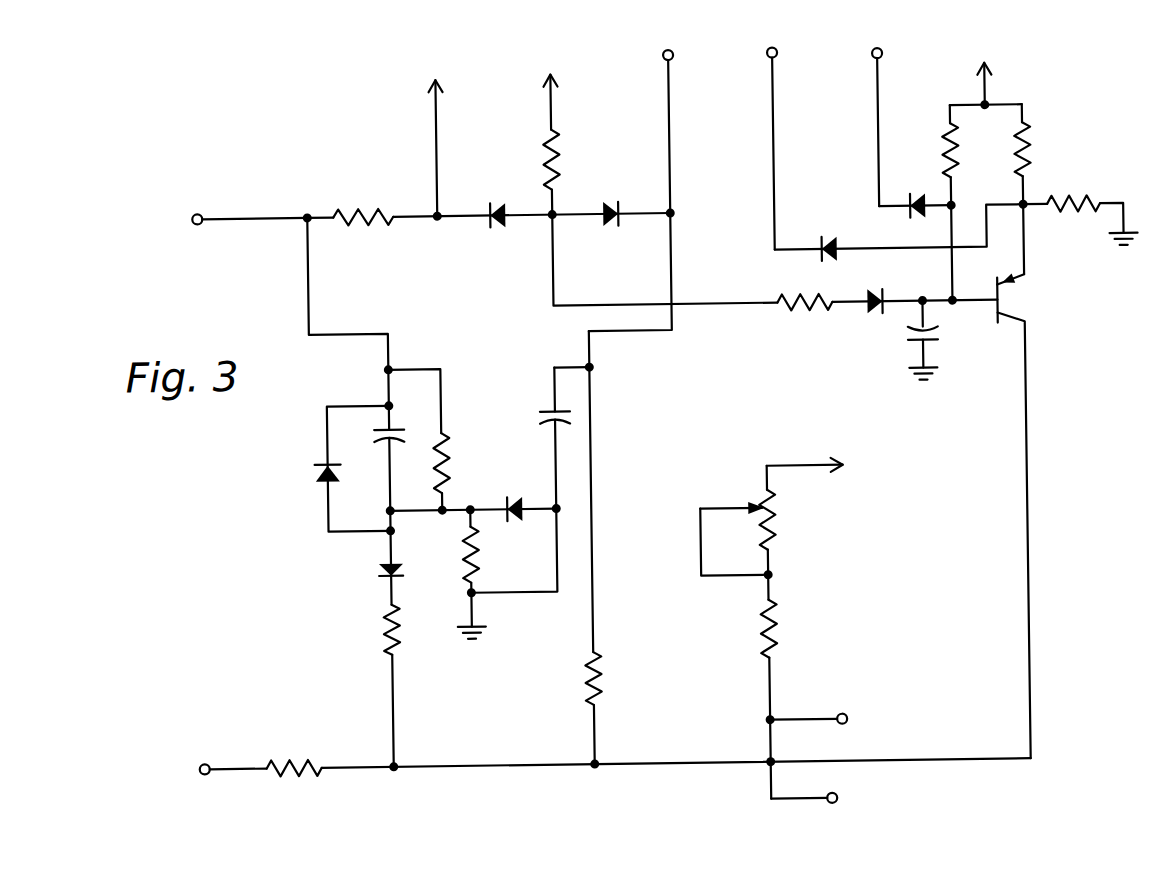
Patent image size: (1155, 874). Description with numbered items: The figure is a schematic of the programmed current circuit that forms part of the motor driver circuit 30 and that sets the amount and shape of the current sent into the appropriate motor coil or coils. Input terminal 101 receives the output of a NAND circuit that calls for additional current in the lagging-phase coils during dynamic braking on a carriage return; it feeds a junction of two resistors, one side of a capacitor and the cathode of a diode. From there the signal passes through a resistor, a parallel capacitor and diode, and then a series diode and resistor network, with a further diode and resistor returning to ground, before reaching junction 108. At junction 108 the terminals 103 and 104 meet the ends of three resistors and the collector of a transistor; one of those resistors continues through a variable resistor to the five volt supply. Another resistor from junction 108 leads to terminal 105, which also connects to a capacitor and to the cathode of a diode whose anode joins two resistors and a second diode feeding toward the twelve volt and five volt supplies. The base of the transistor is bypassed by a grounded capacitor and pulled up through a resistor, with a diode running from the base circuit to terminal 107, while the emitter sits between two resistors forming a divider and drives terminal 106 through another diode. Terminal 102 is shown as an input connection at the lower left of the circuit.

The motor driver circuit 30 is at (322, 151).
The input terminal 101 is at (201, 209).
The input terminal 102 is at (200, 758).
The terminal 103 is at (833, 803).
The terminal 104 is at (839, 716).
The terminal 105 is at (669, 54).
The terminal 106 is at (773, 52).
The terminal 107 is at (878, 54).
The junction 108 is at (764, 767).